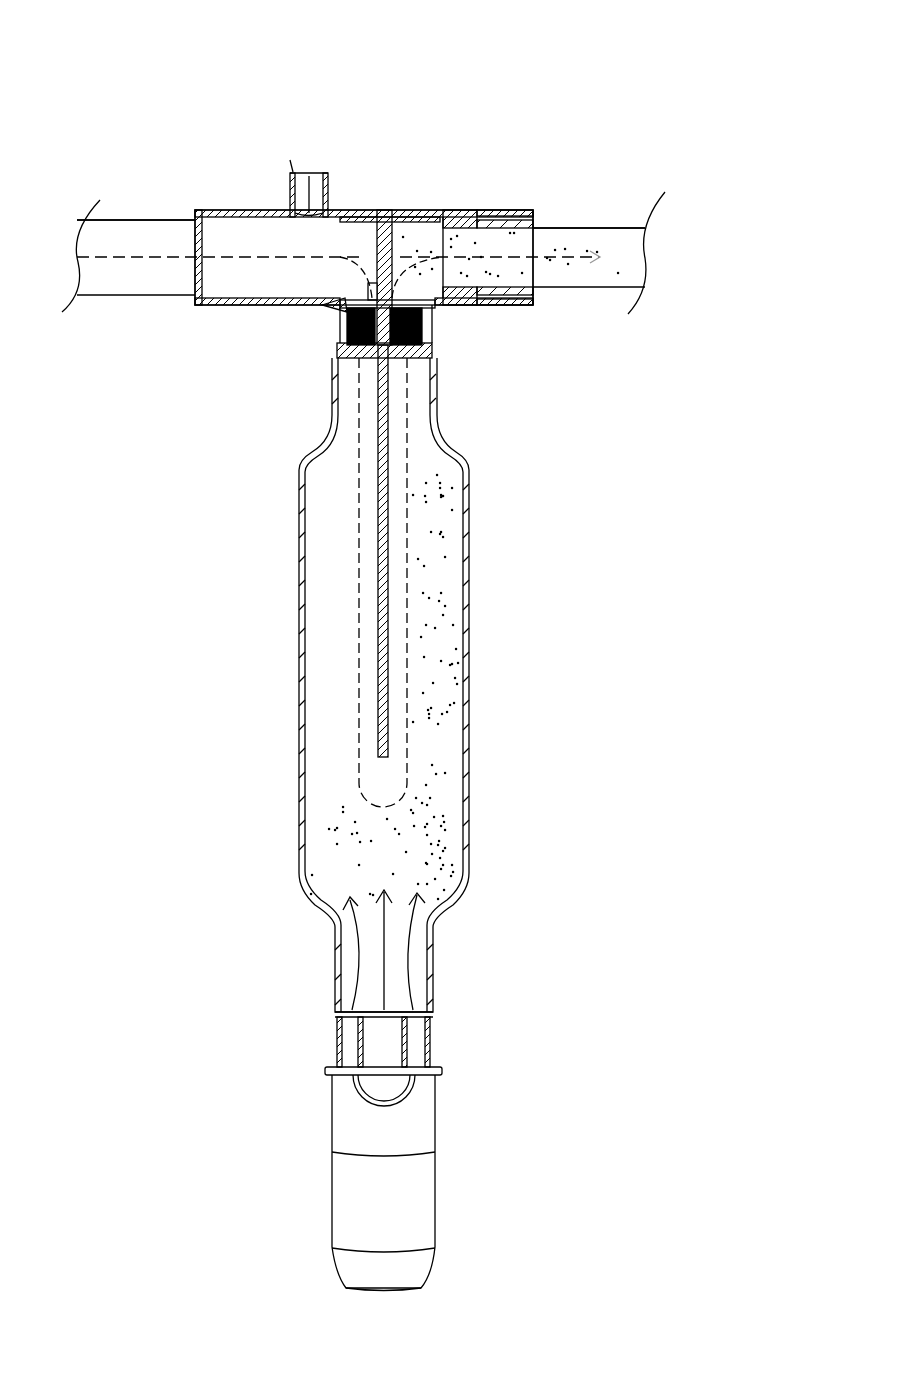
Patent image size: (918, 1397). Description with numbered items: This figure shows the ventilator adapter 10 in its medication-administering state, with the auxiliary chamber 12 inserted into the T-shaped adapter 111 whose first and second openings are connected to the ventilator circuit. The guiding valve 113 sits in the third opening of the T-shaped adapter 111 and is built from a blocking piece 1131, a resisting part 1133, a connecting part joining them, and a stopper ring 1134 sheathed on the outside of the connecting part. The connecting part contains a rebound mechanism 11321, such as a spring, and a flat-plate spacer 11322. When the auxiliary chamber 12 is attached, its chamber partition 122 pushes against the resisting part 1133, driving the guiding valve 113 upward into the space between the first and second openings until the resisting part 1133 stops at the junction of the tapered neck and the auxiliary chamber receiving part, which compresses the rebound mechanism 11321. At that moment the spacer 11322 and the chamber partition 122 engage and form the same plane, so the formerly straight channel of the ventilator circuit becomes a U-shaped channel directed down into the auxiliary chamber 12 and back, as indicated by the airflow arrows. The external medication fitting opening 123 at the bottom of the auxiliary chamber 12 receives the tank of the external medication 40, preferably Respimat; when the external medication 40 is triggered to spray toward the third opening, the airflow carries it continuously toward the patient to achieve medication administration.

The ventilator adapter 10 is at (268, 78).
The T-shaped adapter 111 is at (404, 128).
The blocking piece 1131 is at (368, 215).
The spacer 11322 is at (398, 222).
The rebound mechanism 11321 is at (425, 318).
The resisting part 1133 is at (432, 350).
The stopper ring 1134 is at (335, 308).
The guiding valve 113 is at (330, 332).
The auxiliary chamber 12 is at (468, 662).
The chamber partition 122 is at (378, 568).
The external medication fitting opening 123 is at (338, 968).
The external medication 40 is at (408, 952).